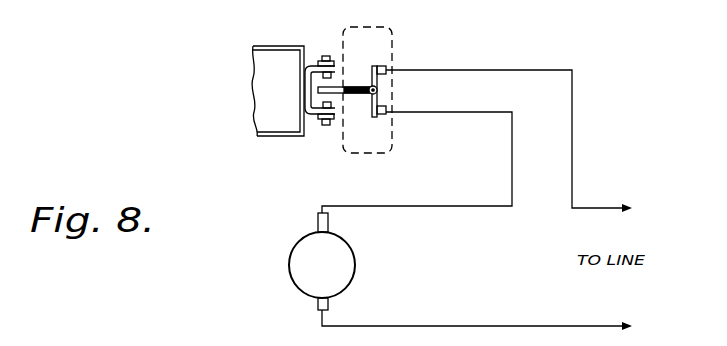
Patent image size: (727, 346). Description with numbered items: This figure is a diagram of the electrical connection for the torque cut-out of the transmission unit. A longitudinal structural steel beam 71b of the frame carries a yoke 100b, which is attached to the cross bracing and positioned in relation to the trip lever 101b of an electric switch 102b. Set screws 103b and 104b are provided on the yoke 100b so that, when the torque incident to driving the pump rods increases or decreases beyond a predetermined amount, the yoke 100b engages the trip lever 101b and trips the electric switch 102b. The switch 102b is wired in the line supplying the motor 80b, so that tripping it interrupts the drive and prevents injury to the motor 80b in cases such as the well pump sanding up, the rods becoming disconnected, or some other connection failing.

The longitudinal structural steel beam 71b is at (260, 88).
The yoke 100b is at (315, 116).
The trip lever 101b is at (337, 90).
The electric switch 102b is at (395, 42).
The set screw 103b is at (322, 56).
The set screw 104b is at (327, 126).
The motor 80b is at (292, 273).